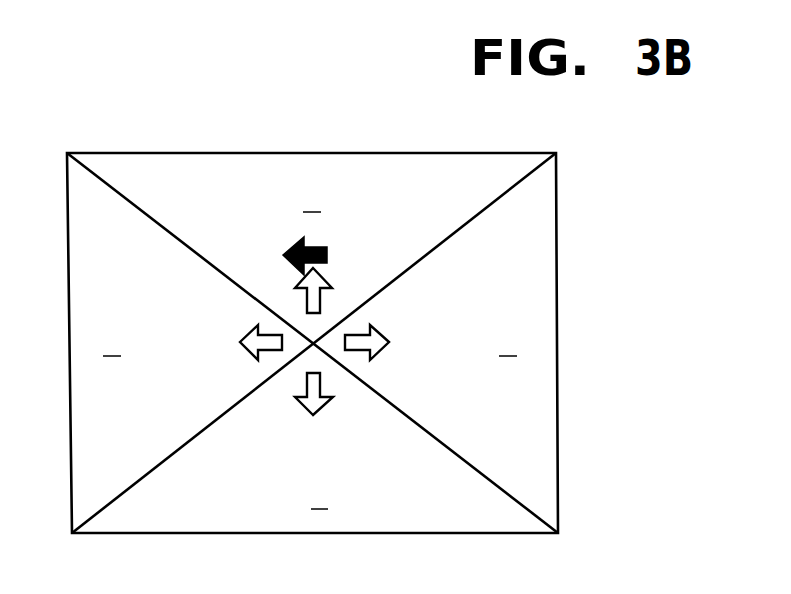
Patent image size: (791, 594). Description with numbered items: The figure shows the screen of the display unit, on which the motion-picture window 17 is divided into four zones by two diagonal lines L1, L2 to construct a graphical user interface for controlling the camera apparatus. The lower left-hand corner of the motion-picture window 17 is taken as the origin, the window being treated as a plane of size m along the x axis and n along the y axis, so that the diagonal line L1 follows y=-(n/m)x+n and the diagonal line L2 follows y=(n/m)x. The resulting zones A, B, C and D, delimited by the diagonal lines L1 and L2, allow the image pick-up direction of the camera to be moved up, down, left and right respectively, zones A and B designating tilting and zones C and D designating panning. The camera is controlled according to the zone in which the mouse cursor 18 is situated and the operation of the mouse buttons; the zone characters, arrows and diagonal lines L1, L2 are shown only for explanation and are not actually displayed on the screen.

The motion-picture window 17 is at (373, 343).
The mouse cursor 18 is at (327, 246).
The diagonal line L1 is at (140, 211).
The diagonal line L2 is at (135, 483).